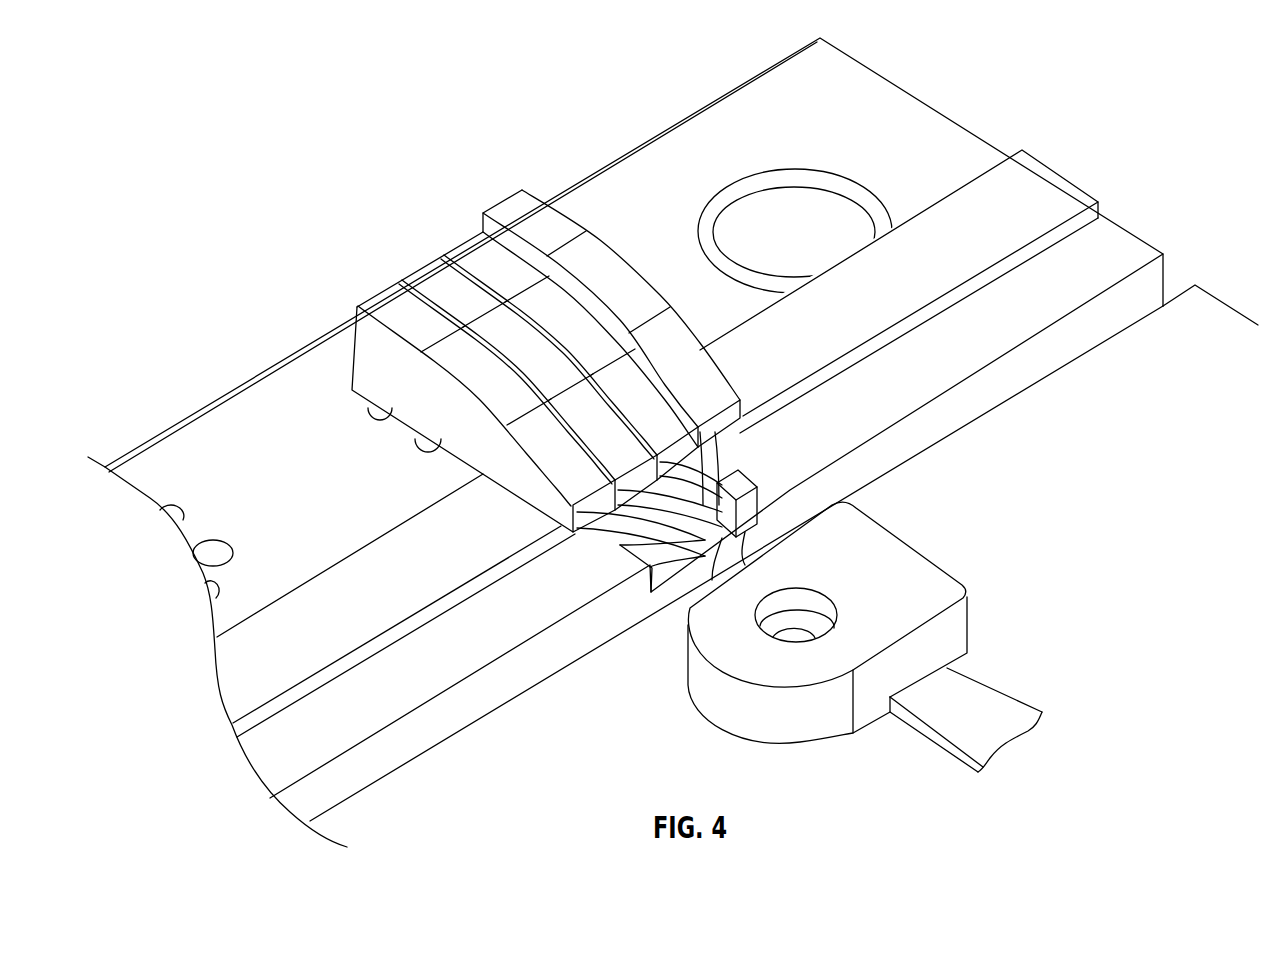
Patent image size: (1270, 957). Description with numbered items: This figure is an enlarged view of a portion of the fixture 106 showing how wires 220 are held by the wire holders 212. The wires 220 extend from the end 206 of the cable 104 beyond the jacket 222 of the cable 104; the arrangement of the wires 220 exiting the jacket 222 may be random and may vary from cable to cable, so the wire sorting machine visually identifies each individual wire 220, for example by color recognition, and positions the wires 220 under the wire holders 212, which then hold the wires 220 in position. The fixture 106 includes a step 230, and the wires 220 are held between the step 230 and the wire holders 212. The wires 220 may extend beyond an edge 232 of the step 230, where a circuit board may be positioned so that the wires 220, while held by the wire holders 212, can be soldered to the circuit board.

The cable 104 is at (990, 710).
The fixture 106 is at (1199, 312).
The end of the cable 206 is at (773, 520).
The wire holders 212 is at (634, 240).
The wires 220 is at (708, 477).
The jacket 222 is at (713, 567).
The step 230 is at (1030, 172).
The edge of the step 232 is at (957, 190).